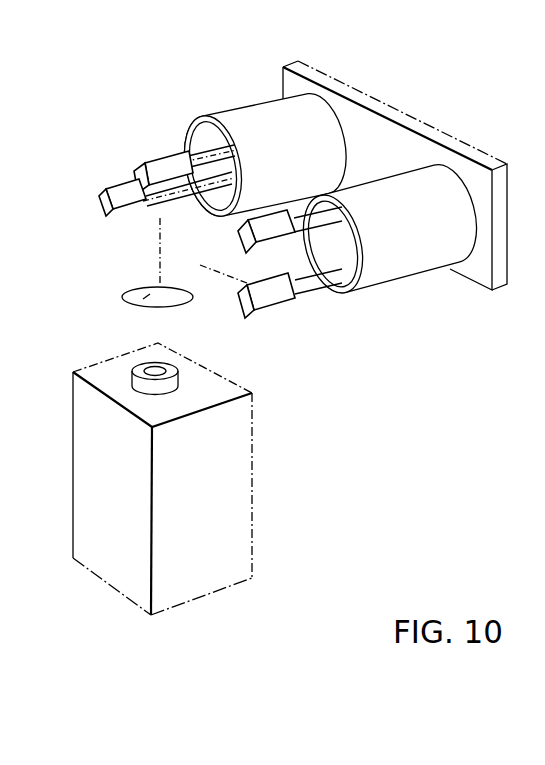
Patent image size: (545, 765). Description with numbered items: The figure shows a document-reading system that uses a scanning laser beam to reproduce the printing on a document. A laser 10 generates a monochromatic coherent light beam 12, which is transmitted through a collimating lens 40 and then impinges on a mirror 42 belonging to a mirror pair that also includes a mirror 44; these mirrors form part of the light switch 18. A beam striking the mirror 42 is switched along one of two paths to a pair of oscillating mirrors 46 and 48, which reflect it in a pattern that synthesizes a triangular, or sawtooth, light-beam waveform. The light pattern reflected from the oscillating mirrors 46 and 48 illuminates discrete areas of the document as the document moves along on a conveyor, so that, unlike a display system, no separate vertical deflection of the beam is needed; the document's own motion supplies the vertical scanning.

The laser 10 is at (240, 552).
The light beam 12 is at (160, 328).
The light switch 18 is at (225, 104).
The collimating lens 40 is at (142, 302).
The mirror 42 is at (157, 152).
The mirror 44 is at (120, 219).
The oscillating mirror 46 is at (281, 253).
The oscillating mirror 48 is at (270, 313).